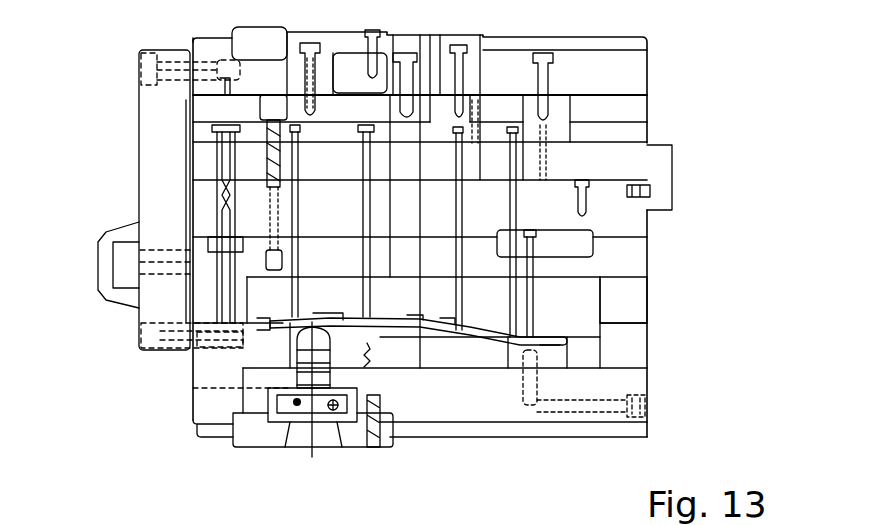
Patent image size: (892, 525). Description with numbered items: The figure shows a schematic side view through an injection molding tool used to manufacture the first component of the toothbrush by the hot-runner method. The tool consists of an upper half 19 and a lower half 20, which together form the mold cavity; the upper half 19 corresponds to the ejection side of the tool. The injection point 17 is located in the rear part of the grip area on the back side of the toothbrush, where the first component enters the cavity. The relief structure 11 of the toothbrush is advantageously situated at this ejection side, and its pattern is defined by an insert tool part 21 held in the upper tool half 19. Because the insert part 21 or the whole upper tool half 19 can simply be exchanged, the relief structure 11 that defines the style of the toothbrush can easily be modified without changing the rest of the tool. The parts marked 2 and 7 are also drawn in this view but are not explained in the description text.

The hot runner nozzle 17 is at (318, 330).
The mold plate 19 is at (600, 297).
The mold plate 20 is at (590, 357).
The manifold bar 21 is at (435, 302).
The cavity plate 11 is at (426, 298).
The spring 2 is at (380, 350).
The support element 7 is at (548, 348).